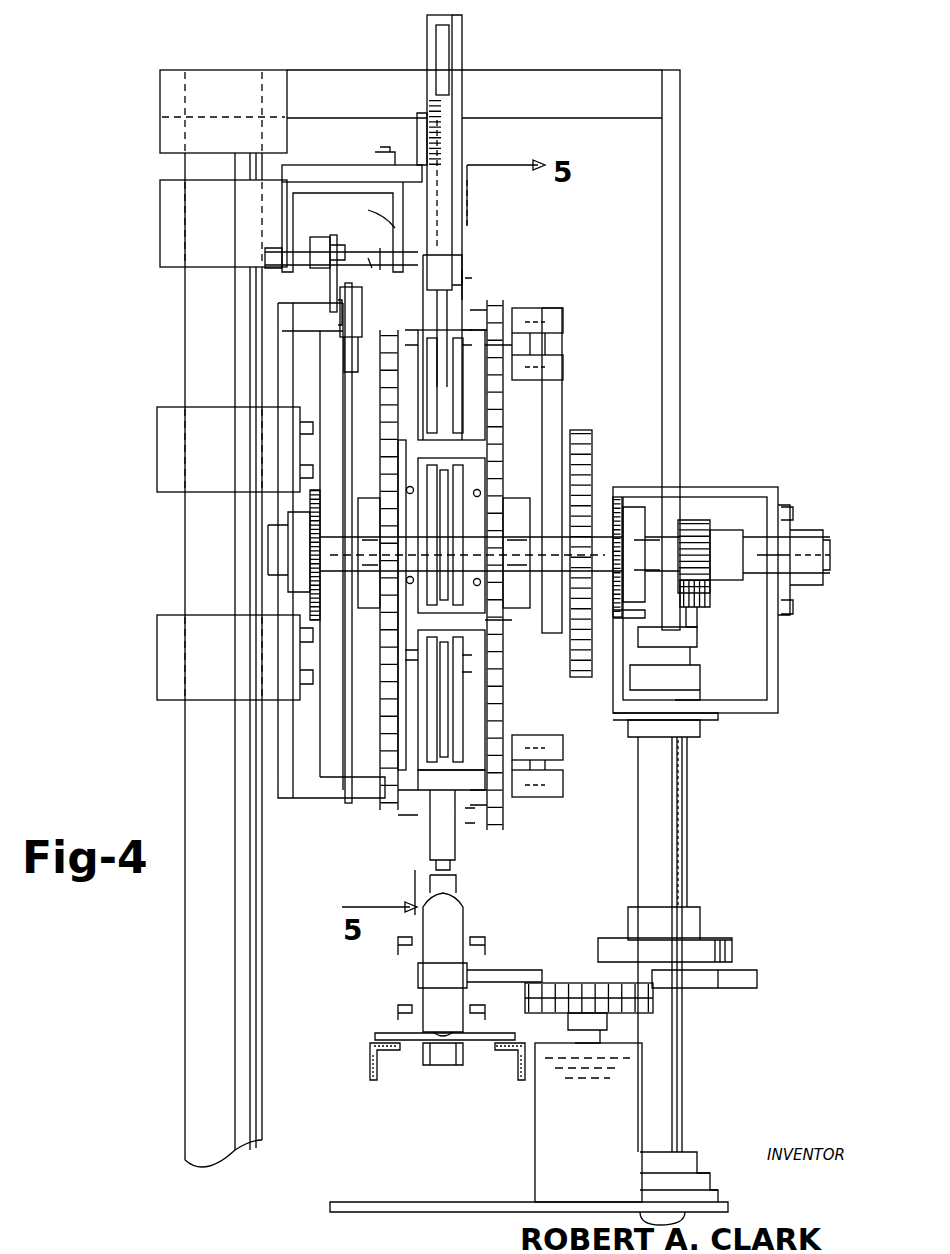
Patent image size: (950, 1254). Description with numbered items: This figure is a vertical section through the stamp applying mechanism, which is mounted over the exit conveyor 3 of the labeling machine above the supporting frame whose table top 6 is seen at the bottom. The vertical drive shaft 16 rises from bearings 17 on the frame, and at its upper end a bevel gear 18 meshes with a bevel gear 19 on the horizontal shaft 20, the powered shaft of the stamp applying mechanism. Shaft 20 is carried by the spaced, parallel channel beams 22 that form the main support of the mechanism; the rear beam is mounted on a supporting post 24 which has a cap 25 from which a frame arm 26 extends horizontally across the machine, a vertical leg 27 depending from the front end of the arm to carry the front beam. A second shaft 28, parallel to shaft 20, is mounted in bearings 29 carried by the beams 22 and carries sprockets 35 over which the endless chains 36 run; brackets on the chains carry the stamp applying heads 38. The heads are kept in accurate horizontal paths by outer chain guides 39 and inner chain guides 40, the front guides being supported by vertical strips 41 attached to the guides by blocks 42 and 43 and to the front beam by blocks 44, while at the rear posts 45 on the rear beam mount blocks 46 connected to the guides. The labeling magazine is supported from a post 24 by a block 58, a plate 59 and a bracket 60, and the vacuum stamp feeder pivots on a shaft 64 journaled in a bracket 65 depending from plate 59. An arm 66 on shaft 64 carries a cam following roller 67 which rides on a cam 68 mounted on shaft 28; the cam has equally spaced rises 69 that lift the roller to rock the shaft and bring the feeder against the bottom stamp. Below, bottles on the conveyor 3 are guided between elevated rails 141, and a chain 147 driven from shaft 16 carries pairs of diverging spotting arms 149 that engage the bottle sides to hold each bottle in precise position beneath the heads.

The exit conveyor 3 is at (425, 1068).
The top 6 is at (420, 1200).
The vertical drive shaft 16 is at (682, 1107).
The bearings 17 is at (700, 1167).
The bevel gear 18 is at (700, 600).
The bevel gear 19 is at (700, 530).
The horizontal shaft 20 is at (755, 545).
The channel beams 22 is at (310, 585).
The supporting posts 24 is at (190, 970).
The caps 25 is at (160, 120).
The frame arms 26 is at (402, 72).
The vertical legs 27 is at (680, 248).
The second shaft 28 is at (594, 530).
The bearings 29 is at (288, 530).
The sprockets 35 is at (495, 465).
The endless chains 36 is at (380, 735).
The stamp applying heads 38 is at (474, 262).
The chain guides 39 is at (467, 318).
The chain guides 40 is at (520, 360).
The vertical strips 41 is at (557, 418).
The blocks 42 is at (535, 300).
The blocks 43 is at (545, 372).
The blocks 44 is at (592, 500).
The posts 45 is at (290, 383).
The blocks 46 is at (290, 313).
The block 58 is at (160, 222).
The plate 59 is at (303, 165).
The bracket 60 is at (415, 148).
The shaft 64 is at (338, 250).
The bracket 65 is at (285, 204).
The arm 66 is at (323, 278).
The cam following roller 67 is at (372, 268).
The cam 68 is at (335, 408).
The rises 69 is at (340, 452).
The guide rails 141 is at (475, 1010).
The chain 147 is at (600, 985).
The spotting arms 149 is at (757, 978).